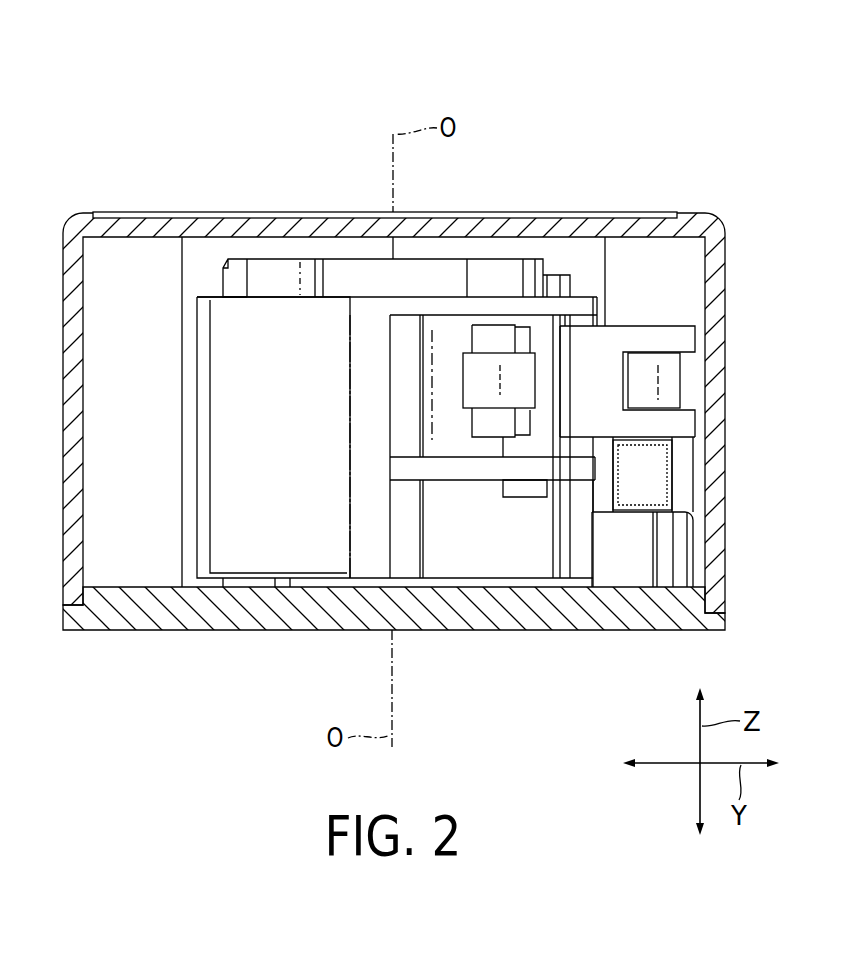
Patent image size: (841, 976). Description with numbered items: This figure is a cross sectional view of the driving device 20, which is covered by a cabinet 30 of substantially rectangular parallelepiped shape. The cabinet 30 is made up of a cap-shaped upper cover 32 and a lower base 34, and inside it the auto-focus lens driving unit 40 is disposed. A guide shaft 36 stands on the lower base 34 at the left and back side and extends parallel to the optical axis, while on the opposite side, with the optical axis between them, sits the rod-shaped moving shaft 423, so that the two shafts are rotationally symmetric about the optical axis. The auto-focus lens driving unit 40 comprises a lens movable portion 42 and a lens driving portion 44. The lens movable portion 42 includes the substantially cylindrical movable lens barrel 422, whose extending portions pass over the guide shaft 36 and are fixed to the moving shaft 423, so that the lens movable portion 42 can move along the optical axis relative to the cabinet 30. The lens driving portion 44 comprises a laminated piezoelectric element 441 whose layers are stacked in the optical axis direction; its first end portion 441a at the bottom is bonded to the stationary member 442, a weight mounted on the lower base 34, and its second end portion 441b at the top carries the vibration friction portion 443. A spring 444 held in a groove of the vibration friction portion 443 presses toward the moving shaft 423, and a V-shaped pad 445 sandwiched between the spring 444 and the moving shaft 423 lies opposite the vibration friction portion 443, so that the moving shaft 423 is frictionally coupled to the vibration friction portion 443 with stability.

The driving device 20 is at (586, 104).
The cabinet 30 is at (697, 206).
The upper cover 32 is at (714, 227).
The lower base 34 is at (550, 620).
The guide shaft 36 is at (231, 283).
The auto-focus lens driving unit 40 is at (365, 250).
The lens movable portion 42 is at (187, 435).
The movable lens barrel 422 is at (325, 548).
The moving shaft 423 is at (537, 448).
The lens driving portion 44 is at (677, 313).
The laminated piezoelectric element 441 is at (660, 472).
The first end portion 441a is at (650, 513).
The second end portion 441b is at (650, 433).
The stationary member 442 is at (642, 575).
The vibration friction portion 443 is at (683, 341).
The spring 444 is at (477, 380).
The pad 445 is at (492, 343).